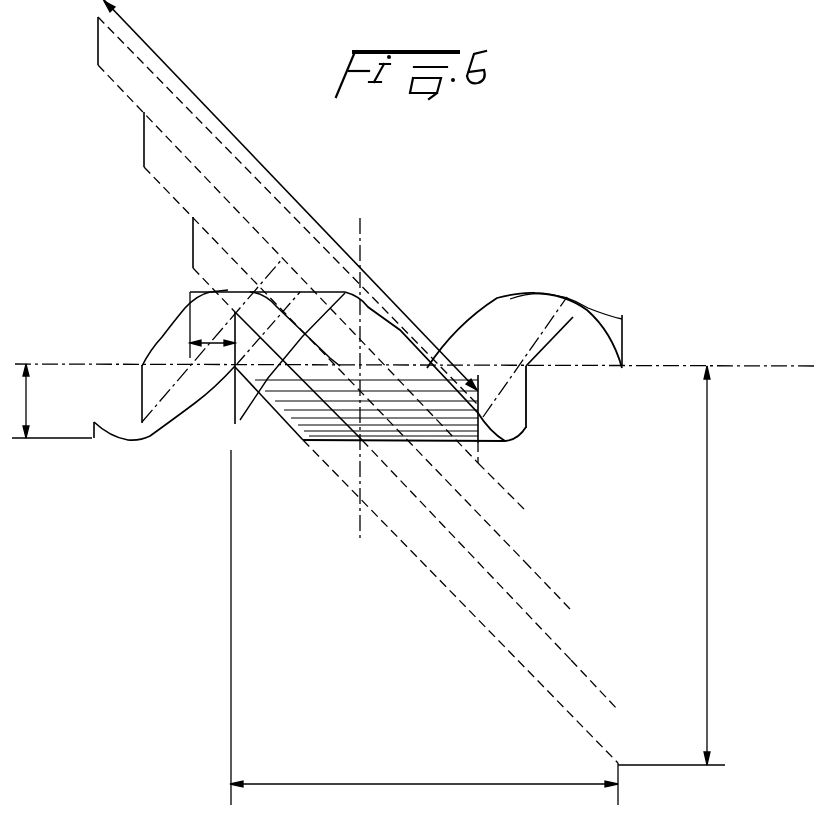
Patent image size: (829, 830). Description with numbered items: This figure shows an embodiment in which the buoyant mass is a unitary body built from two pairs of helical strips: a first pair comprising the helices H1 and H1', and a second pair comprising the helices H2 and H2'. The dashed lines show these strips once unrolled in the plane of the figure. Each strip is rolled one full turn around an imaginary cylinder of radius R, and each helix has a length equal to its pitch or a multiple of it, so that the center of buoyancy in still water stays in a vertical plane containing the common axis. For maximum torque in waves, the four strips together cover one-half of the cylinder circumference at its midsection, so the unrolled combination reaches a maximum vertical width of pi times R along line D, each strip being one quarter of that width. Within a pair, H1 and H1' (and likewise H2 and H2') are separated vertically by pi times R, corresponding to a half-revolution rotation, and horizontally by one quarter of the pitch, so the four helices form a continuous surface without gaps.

The helix of the first pair H1 is at (126, 250).
The helix of the second pair H2 is at (343, 278).
The helix of the first pair H1' is at (161, 242).
The helix of the second pair H2' is at (456, 376).
The line of maximum vertical width D is at (361, 238).
The radius of the imaginary cylinder R is at (17, 401).